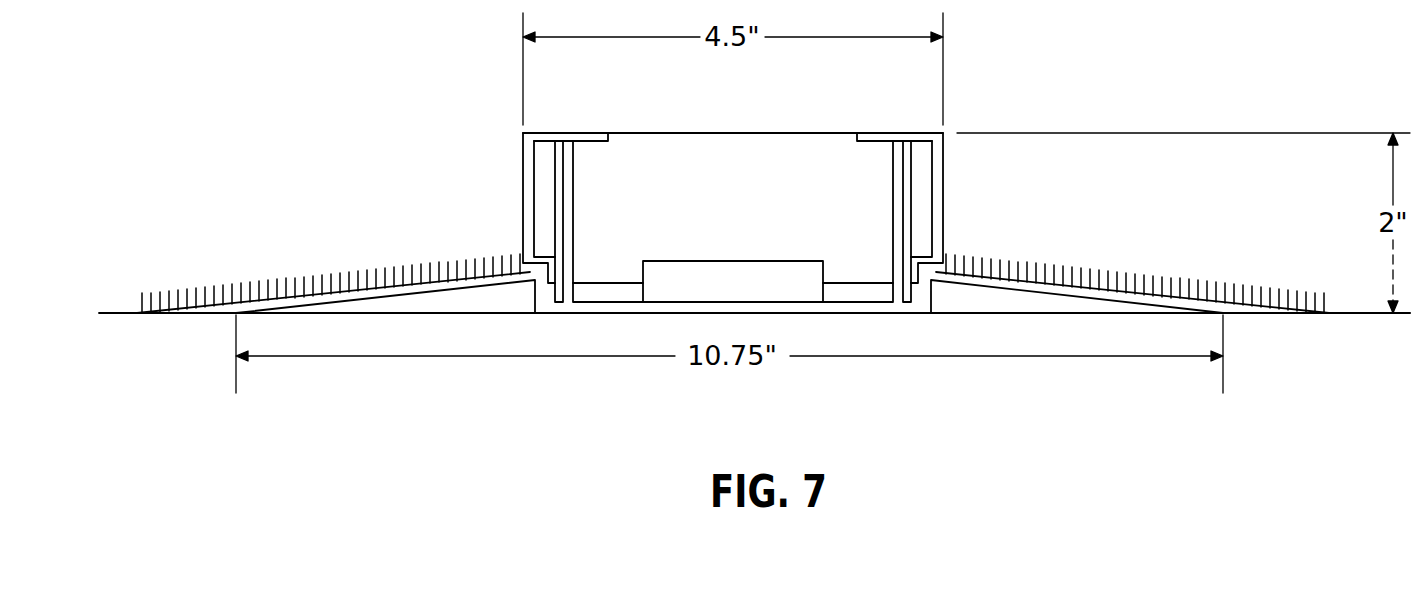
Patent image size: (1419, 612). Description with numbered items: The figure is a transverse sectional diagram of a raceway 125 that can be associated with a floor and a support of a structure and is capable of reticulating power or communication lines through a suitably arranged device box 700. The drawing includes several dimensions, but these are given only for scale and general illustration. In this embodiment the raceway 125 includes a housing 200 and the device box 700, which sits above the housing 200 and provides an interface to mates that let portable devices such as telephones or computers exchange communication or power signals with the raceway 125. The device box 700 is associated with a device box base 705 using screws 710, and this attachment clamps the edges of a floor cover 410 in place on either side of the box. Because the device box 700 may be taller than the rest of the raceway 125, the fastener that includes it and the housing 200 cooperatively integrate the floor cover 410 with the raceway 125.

The raceway 125 is at (478, 129).
The device box 700 is at (735, 133).
The screws 710 is at (897, 135).
The housing 200 is at (722, 300).
The device box base 705 is at (920, 293).
The floor cover 410 is at (248, 270).